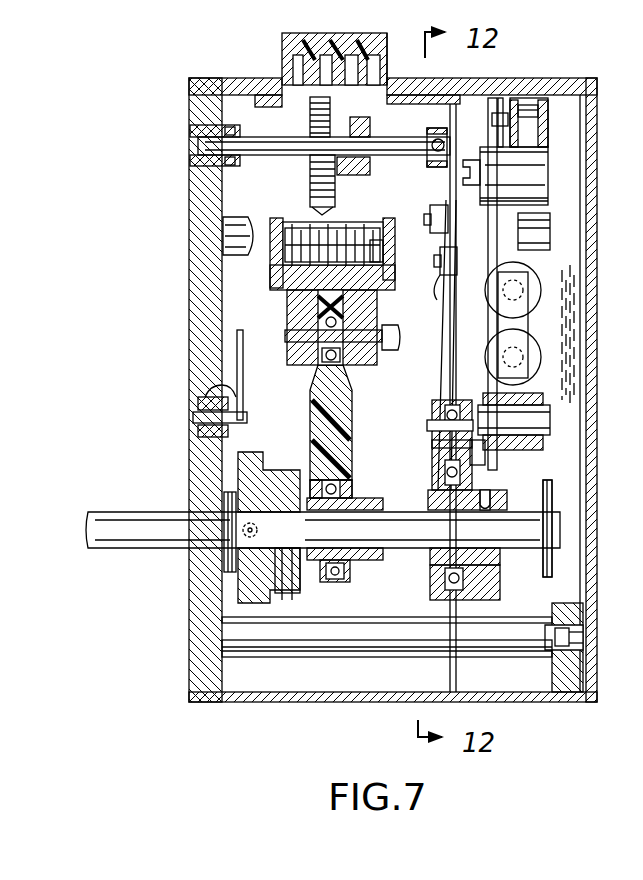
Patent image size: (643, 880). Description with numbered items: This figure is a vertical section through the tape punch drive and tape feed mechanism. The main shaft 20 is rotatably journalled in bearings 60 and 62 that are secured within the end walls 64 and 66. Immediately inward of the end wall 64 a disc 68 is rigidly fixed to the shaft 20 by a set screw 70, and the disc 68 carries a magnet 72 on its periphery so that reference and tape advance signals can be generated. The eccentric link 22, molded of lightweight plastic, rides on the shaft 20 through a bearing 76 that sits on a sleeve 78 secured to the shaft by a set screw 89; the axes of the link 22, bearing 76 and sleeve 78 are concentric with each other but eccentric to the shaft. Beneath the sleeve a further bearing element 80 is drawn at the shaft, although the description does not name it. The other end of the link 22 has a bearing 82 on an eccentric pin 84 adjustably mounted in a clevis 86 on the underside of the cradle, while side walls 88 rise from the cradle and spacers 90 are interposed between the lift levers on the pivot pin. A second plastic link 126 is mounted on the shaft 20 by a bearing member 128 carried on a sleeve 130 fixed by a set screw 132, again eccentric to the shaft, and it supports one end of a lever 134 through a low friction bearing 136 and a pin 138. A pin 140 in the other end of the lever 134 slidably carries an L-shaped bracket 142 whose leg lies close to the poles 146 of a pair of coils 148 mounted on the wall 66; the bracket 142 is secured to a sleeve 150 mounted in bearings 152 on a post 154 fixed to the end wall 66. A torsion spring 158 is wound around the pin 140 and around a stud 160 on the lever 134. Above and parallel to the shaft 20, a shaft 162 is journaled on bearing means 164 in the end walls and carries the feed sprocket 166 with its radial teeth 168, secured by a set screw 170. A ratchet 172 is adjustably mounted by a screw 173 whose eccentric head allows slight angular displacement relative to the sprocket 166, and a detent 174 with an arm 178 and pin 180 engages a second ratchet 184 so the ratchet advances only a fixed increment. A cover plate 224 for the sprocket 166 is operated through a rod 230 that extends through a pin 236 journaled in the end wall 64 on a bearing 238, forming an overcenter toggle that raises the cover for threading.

The shaft 20 is at (102, 520).
The eccentric link 22 is at (310, 400).
The bearing 60 is at (218, 590).
The bearing 62 is at (553, 570).
The end wall 64 is at (200, 617).
The end wall 66 is at (570, 670).
The disc 68 is at (240, 462).
The set screw 70 is at (272, 583).
The magnet 72 is at (178, 562).
The bearing 76 is at (347, 487).
The sleeve 78 is at (382, 500).
The bearing 80 is at (352, 572).
The bearing 82 is at (320, 310).
The eccentric pin 84 is at (323, 333).
The clevis 86 is at (318, 358).
The side walls 88 is at (278, 220).
The set screw 89 is at (383, 258).
The spacers 90 is at (348, 226).
The second link 126 is at (447, 393).
The bearing member 128 is at (470, 570).
The sleeve 130 is at (510, 498).
The set screw 132 is at (488, 490).
The lever 134 is at (452, 335).
The low friction bearing 136 is at (432, 440).
The pin 138 is at (436, 418).
The pin 140 is at (435, 215).
The L-shaped bracket 142 is at (527, 330).
The poles 146 is at (543, 278).
The coils 148 is at (520, 293).
The sleeve 150 is at (547, 395).
The bearings 152 is at (543, 452).
The post 154 is at (533, 423).
The torsion spring 158 is at (443, 207).
The stud 160 is at (443, 283).
The shaft 162 is at (217, 148).
The bearing means 164 is at (203, 132).
The feed sprocket 166 is at (310, 115).
The teeth 168 is at (323, 75).
The set screw 170 is at (358, 126).
The ratchet 172 is at (490, 98).
The screw 173 is at (438, 140).
The detent 174 is at (533, 193).
The arm 178 is at (547, 100).
The pin 180 is at (510, 120).
The second ratchet 184 is at (532, 98).
The cover plate 224 is at (388, 57).
The rod 230 is at (235, 348).
The pin 236 is at (200, 417).
The bearing 238 is at (200, 395).